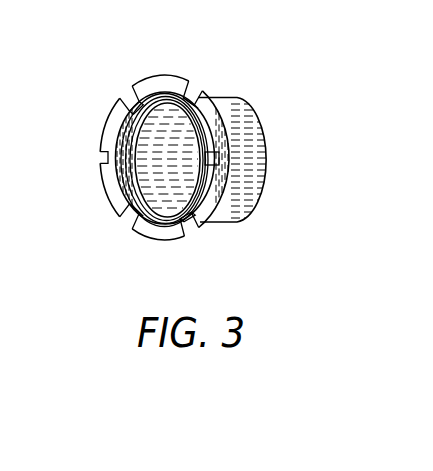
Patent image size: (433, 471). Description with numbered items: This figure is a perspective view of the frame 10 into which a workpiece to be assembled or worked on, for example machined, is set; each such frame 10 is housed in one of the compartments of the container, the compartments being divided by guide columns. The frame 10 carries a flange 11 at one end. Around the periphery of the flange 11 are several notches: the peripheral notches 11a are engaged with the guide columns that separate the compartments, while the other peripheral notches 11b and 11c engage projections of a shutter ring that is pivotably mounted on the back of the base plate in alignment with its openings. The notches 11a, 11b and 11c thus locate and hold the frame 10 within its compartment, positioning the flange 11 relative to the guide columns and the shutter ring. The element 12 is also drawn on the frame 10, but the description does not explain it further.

The frame 10 is at (247, 192).
The flange 11 is at (157, 233).
The peripheral notches 11a is at (102, 155).
The peripheral notches 11b is at (194, 88).
The peripheral notches 11c is at (126, 96).
The inner ring 12 is at (133, 180).